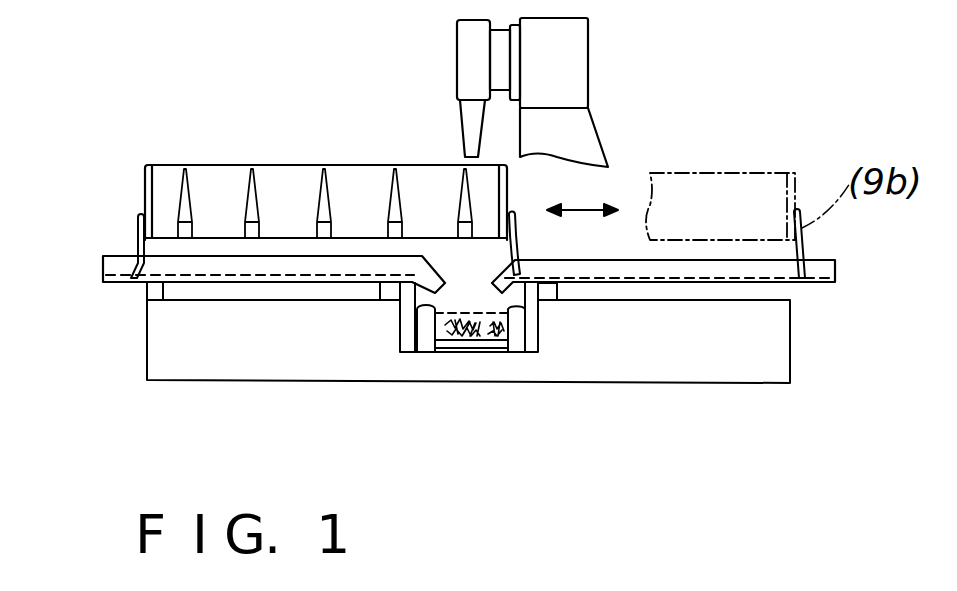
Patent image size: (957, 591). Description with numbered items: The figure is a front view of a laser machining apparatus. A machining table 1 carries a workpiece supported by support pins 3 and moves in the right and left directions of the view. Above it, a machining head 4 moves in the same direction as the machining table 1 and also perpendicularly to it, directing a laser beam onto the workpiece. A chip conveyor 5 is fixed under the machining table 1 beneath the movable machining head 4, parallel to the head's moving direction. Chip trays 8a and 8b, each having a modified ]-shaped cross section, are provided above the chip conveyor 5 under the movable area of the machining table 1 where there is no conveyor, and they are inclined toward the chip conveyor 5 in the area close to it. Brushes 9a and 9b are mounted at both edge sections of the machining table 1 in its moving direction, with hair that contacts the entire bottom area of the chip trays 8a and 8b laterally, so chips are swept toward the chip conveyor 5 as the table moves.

The machining table 1 is at (145, 190).
The support pins 3 is at (253, 196).
The machining head 4 is at (470, 57).
The chip conveyor 5 is at (483, 337).
The chip tray 8a is at (255, 270).
The chip tray 8b is at (703, 267).
The brush 9a is at (140, 226).
The brush 9b is at (513, 215).